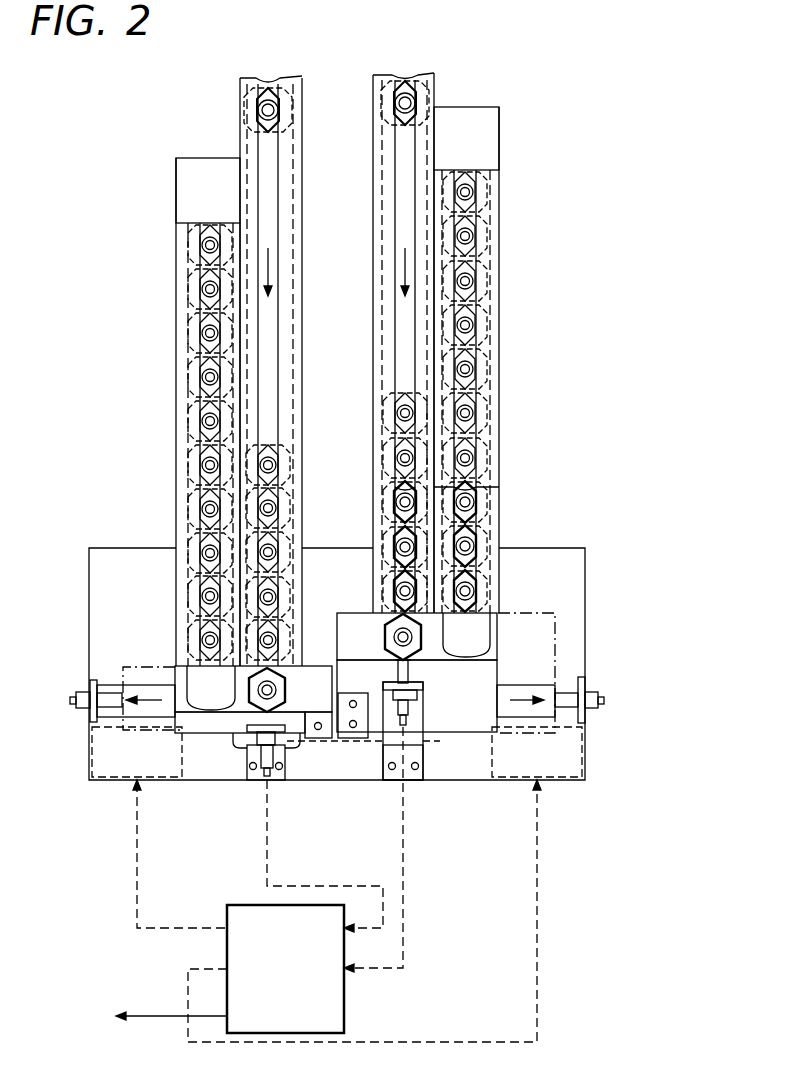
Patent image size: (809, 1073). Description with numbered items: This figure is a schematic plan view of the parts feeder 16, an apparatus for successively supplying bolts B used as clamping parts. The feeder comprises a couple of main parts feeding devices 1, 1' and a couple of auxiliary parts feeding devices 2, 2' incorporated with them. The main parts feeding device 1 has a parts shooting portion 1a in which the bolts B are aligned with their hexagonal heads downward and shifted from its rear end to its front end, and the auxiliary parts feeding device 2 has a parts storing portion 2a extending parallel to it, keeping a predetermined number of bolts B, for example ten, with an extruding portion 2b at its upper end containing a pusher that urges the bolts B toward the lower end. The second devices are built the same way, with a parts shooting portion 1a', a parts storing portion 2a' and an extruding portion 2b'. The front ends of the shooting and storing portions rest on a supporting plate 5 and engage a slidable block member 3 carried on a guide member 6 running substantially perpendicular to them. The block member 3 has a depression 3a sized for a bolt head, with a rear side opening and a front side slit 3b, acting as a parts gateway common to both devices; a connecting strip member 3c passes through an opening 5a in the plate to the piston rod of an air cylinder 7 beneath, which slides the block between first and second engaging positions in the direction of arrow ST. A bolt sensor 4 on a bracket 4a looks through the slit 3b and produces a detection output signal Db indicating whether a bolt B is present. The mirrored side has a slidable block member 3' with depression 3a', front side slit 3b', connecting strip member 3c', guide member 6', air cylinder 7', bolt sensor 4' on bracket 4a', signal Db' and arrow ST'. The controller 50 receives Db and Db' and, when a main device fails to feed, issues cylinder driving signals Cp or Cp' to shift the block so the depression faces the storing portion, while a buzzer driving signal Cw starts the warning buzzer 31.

The parts feeder 16 is at (167, 90).
The main parts feeding device 1 is at (270, 355).
The parts shooting portion 1a is at (288, 88).
The main parts feeding device 1' is at (422, 328).
The parts shooting portion 1a' is at (390, 85).
The auxiliary parts feeding device 2 is at (173, 411).
The parts storing portion 2a is at (174, 442).
The extruding portion 2b is at (178, 190).
The auxiliary parts feeding device 2' is at (500, 350).
The parts storing portion 2a' is at (501, 325).
The extruding portion 2b' is at (499, 129).
The slidable block member 3 is at (230, 730).
The depression 3a is at (292, 670).
The front side slit 3b is at (240, 739).
The connecting strip member 3c is at (321, 774).
The slidable block member 3' is at (482, 696).
The depression 3a' is at (416, 617).
The front side slit 3b' is at (439, 674).
The connecting strip member 3c' is at (356, 755).
The bolt sensor 4 is at (267, 771).
The bracket 4a is at (260, 781).
The bolt sensor 4' is at (434, 720).
The bracket 4a' is at (434, 731).
The supporting plate 5 is at (337, 666).
The opening 5a is at (421, 746).
The guide member 6 is at (116, 698).
The guide member 6' is at (558, 719).
The air cylinder 7 is at (120, 772).
The air cylinder 7' is at (558, 767).
The bolt B is at (204, 546).
The arrow ST is at (134, 667).
The arrow ST' is at (524, 729).
The controller 50 is at (346, 993).
The cylinder driving signal Cp is at (180, 855).
The cylinder driving signal Cp' is at (364, 911).
The detection output signal Db is at (325, 856).
The detection output signal Db' is at (373, 849).
The buzzer driving signal Cw is at (171, 1004).
The warning buzzer 31 is at (98, 1017).